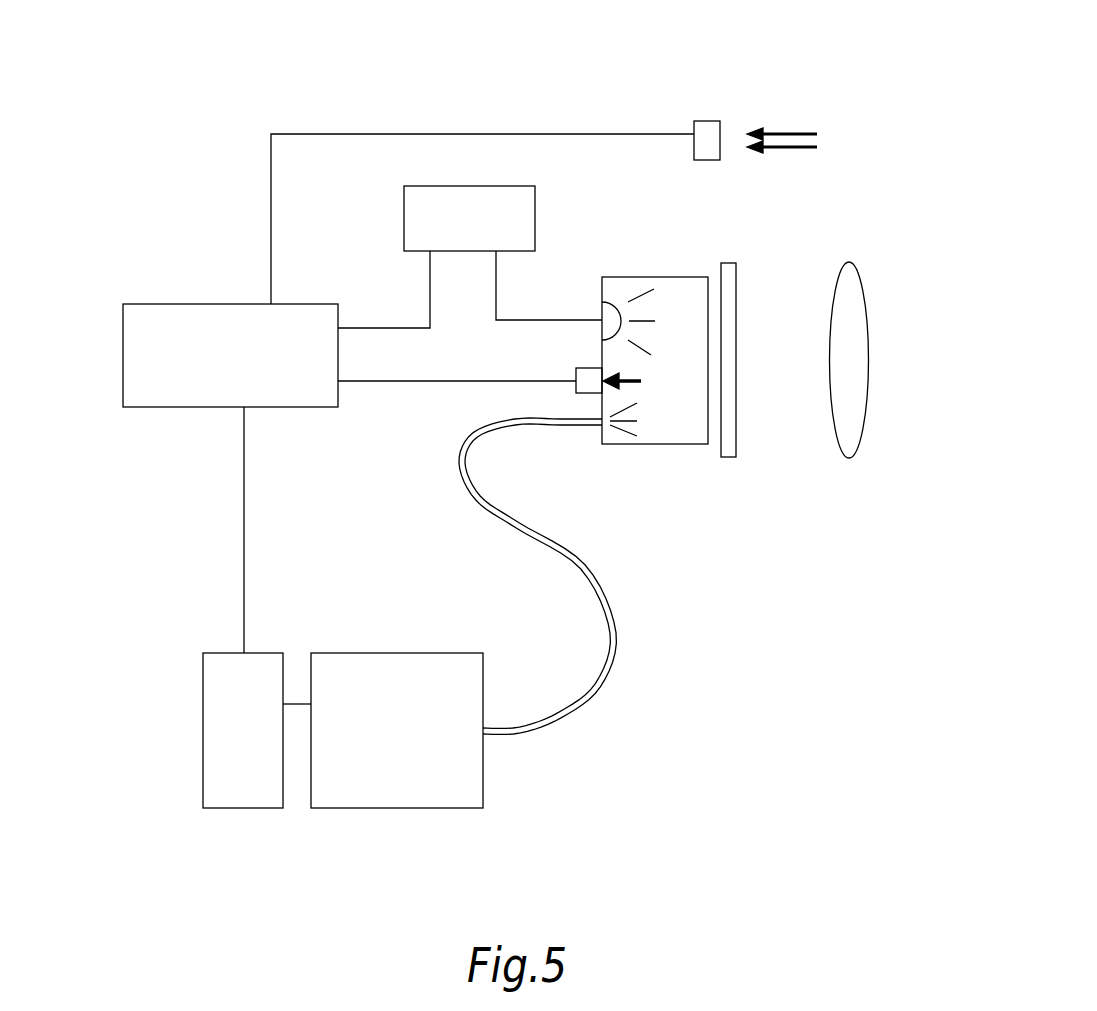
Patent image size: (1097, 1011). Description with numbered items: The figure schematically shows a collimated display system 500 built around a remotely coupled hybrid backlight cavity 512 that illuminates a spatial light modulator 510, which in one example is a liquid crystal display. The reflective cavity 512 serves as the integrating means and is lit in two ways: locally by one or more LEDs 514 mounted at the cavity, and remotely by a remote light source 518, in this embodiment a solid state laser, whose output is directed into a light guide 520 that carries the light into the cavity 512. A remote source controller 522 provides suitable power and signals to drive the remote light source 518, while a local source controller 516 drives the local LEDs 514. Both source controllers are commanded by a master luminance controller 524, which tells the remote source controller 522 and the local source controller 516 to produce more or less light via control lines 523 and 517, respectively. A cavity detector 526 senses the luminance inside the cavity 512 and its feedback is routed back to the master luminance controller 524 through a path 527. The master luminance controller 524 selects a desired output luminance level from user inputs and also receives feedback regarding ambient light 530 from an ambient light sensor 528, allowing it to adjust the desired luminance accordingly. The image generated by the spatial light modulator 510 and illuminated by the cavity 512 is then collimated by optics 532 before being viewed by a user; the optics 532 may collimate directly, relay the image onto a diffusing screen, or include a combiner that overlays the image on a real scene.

The collimated display system 500 is at (147, 63).
The spatial light modulator 510 is at (728, 458).
The remotely coupled hybrid backlight cavity 512 is at (673, 440).
The LEDs 514 is at (612, 313).
The local source controller 516 is at (451, 208).
The control line 517 is at (405, 325).
The remote light source 518 is at (400, 795).
The light guide 520 is at (568, 719).
The remote source controller 522 is at (213, 678).
The control line 523 is at (296, 697).
The master luminance controller 524 is at (170, 315).
The cavity detector 526 is at (577, 370).
The path 527 is at (430, 382).
The ambient light sensor 528 is at (707, 128).
The ambient light 530 is at (783, 130).
The optics 532 is at (862, 337).